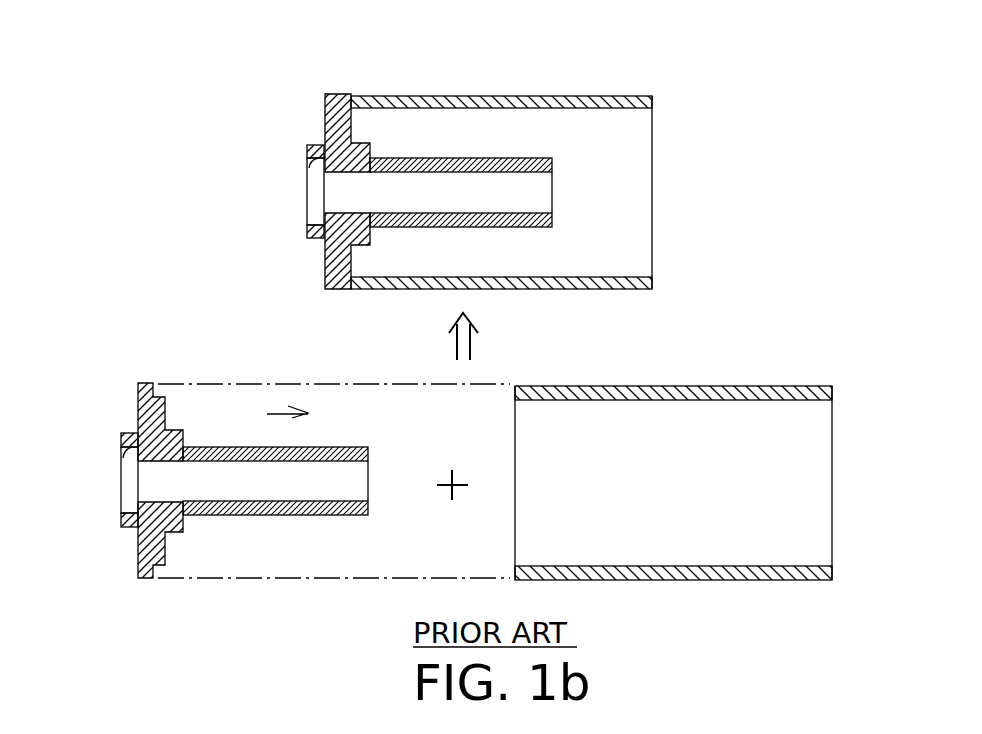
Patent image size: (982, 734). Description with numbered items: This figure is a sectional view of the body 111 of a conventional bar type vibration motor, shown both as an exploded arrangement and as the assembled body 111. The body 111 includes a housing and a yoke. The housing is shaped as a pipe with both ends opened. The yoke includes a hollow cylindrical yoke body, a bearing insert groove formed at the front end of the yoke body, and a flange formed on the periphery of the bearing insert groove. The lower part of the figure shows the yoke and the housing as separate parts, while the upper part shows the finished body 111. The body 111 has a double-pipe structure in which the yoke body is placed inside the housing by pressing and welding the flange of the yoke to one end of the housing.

The body 111 is at (443, 90).